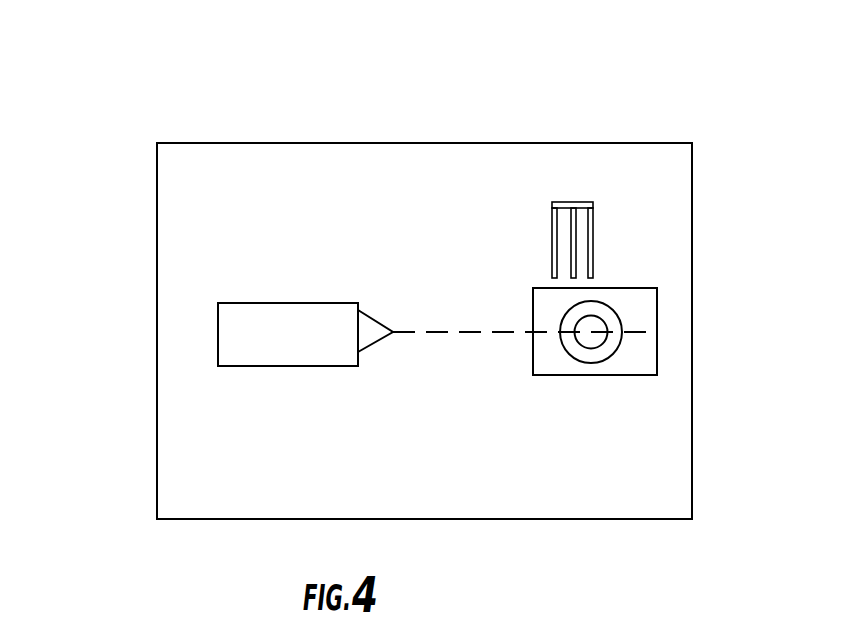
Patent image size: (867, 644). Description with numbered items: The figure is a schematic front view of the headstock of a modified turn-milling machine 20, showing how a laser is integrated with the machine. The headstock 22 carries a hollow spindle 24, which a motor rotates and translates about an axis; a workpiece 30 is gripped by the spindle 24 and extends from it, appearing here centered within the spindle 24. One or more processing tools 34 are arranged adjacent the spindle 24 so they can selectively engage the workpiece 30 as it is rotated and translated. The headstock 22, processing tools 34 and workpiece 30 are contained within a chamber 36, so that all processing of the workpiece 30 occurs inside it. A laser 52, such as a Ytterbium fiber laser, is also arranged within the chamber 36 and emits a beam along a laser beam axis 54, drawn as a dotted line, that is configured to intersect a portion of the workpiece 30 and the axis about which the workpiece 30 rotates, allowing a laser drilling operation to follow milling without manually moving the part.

The turn-milling machine 20 is at (100, 126).
The headstock 22 is at (559, 360).
The hollow spindle 24 is at (607, 348).
The workpiece 30 is at (595, 323).
The processing tools 34 is at (589, 225).
The chamber 36 is at (403, 173).
The laser 52 is at (313, 315).
The laser beam axis 54 is at (470, 332).